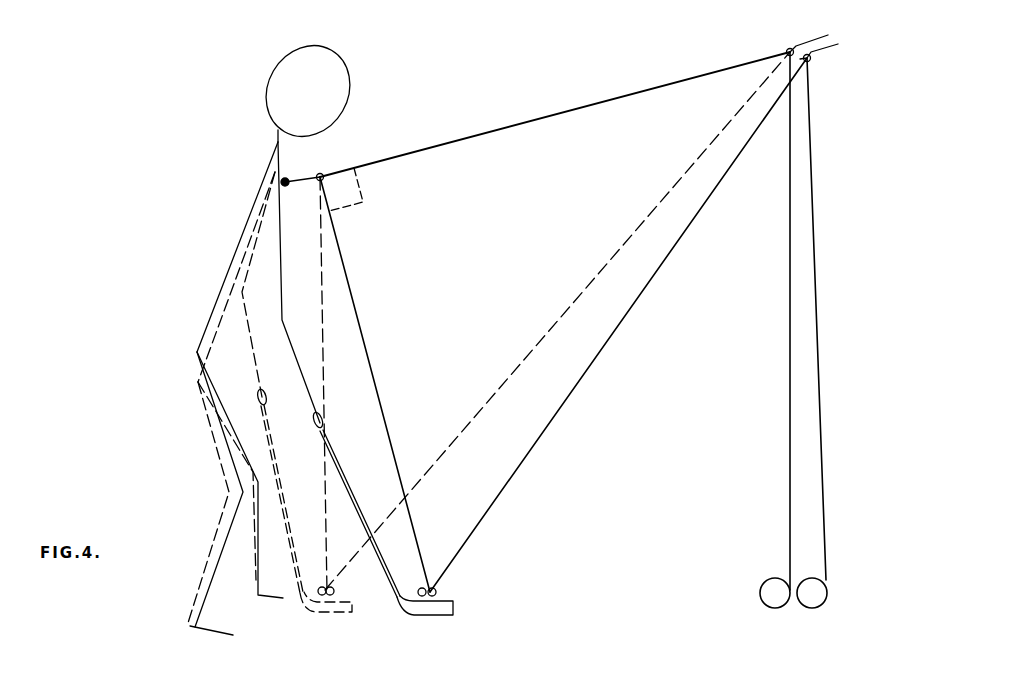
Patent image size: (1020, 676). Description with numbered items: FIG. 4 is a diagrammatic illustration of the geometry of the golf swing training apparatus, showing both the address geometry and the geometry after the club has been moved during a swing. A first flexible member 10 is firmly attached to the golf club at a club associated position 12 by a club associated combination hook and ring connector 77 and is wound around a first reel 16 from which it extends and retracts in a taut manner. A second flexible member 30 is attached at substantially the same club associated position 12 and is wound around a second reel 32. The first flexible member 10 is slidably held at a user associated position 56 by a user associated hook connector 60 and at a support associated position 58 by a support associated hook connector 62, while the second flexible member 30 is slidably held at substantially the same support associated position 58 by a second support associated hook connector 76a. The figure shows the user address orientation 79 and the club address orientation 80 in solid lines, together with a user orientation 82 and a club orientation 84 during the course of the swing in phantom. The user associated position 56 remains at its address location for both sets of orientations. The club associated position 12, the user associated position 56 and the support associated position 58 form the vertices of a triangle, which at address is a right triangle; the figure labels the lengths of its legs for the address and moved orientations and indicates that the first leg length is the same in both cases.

The first flexible member 10 is at (463, 147).
The club associated position 12 is at (335, 591).
The first reel 16 is at (760, 591).
The second flexible member 30 is at (529, 438).
The second reel 32 is at (824, 576).
The user associated position 56 is at (322, 174).
The support associated position 58 is at (787, 57).
The user associated hook connector 60 is at (287, 179).
The support associated hook connector 62 is at (825, 50).
The second support associated hook connector 76a is at (802, 45).
The club associated combination hook and ring connector 77 is at (413, 583).
The user address orientation 79 is at (218, 297).
The club address orientation 80 is at (360, 510).
The user orientation 82 is at (215, 445).
The club orientation 84 is at (286, 500).